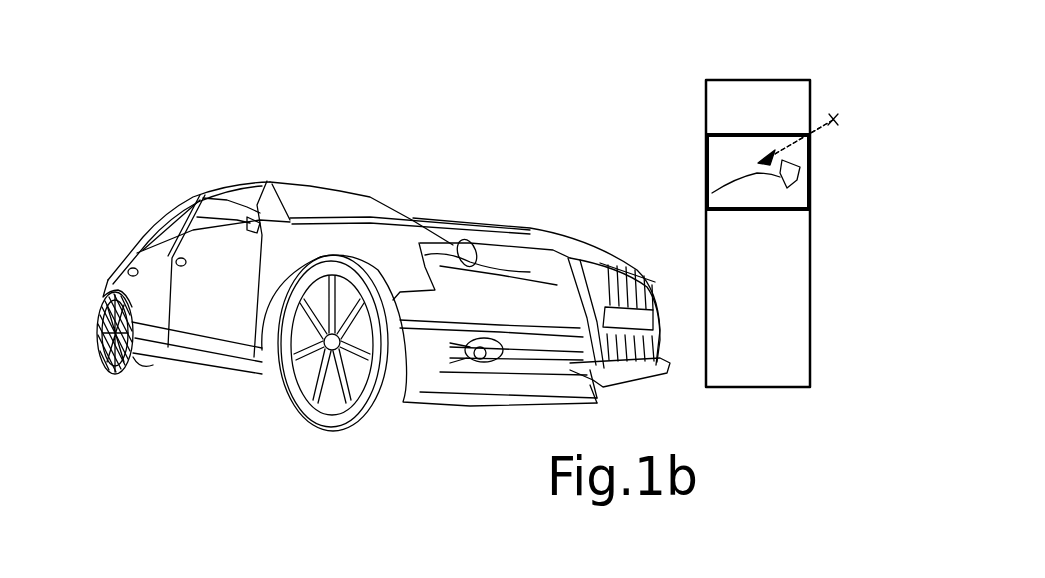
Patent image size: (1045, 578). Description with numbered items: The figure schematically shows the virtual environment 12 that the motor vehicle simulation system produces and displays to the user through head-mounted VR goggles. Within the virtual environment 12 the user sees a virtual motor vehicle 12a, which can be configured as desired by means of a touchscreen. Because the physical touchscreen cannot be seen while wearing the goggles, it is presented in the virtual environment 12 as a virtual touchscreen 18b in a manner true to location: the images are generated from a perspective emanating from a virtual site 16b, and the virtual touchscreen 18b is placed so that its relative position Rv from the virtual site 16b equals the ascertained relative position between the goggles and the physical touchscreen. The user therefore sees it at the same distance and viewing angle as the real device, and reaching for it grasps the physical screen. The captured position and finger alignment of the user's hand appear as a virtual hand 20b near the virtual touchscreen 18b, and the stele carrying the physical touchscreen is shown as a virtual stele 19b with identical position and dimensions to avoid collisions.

The virtual environment 12 is at (409, 112).
The virtual motor vehicle 12a is at (274, 181).
The virtual site 16b is at (833, 120).
The virtual touchscreen 18b is at (732, 155).
The virtual stele 19b is at (730, 240).
The virtual hand 20b is at (712, 193).
The relative position Rv is at (817, 127).